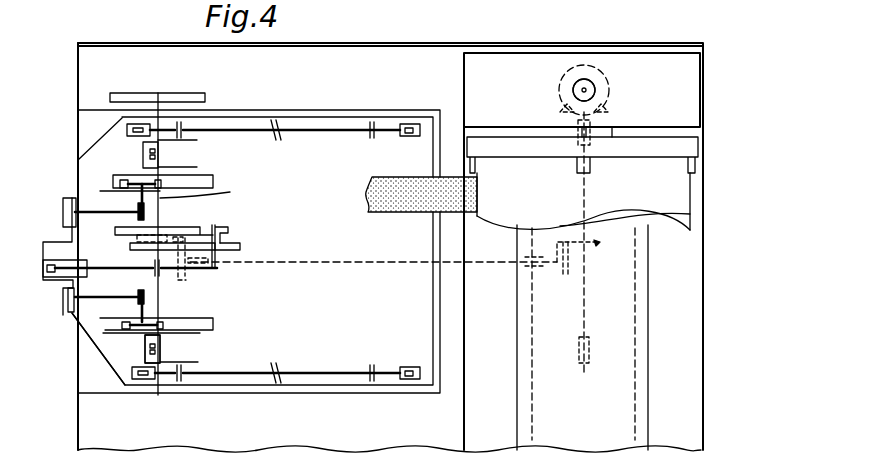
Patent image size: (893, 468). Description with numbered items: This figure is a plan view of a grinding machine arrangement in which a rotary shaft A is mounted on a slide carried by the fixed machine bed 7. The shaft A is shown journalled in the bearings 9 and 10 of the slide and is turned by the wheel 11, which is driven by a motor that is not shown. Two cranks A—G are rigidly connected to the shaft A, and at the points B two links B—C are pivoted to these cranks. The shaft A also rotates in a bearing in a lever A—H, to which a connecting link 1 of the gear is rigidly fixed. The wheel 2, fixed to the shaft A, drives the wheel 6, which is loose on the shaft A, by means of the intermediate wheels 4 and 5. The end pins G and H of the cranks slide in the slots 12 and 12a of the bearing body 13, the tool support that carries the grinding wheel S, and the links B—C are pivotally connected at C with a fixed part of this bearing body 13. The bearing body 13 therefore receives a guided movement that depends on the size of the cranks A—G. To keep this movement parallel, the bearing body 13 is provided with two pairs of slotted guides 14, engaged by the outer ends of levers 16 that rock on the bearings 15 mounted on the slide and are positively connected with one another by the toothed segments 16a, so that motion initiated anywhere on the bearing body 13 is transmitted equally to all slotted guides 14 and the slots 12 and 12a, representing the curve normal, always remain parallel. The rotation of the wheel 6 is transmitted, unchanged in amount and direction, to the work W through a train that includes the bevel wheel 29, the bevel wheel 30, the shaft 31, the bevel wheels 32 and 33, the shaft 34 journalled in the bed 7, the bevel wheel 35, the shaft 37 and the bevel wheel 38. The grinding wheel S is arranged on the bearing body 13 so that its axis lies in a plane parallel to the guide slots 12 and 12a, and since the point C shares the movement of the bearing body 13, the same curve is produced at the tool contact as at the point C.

The connecting link 1 is at (200, 270).
The wheel 2 is at (130, 248).
The intermediate wheel 4 is at (240, 247).
The intermediate wheel 5 is at (228, 230).
The wheel 6 is at (191, 230).
The machine bed 7 is at (85, 432).
The bearing 9 is at (143, 157).
The bearing 10 is at (148, 352).
The wheel 11 is at (134, 96).
The slot 12 is at (213, 180).
The slot 12a is at (63, 262).
The bearing body 13 is at (122, 368).
The slotted guide 14 is at (130, 126).
The bearing 15 is at (181, 128).
The lever 16 is at (228, 129).
The toothed segment 16a is at (279, 132).
The bevel wheel 29 is at (172, 240).
The bevel wheel 30 is at (180, 282).
The shaft 31 is at (400, 266).
The bevel wheel 32 is at (567, 277).
The bevel wheel 33 is at (600, 243).
The shaft 34 is at (587, 299).
The bevel wheel 35 is at (600, 112).
The shaft 37 is at (590, 90).
The bevel wheel 38 is at (597, 72).
The rotary shaft A is at (202, 194).
The pivot point B is at (137, 212).
The pivot point C is at (70, 207).
The crank end pin G is at (122, 177).
The crank end pin H is at (45, 268).
The grinding wheel S is at (421, 207).
The work piece W is at (682, 198).